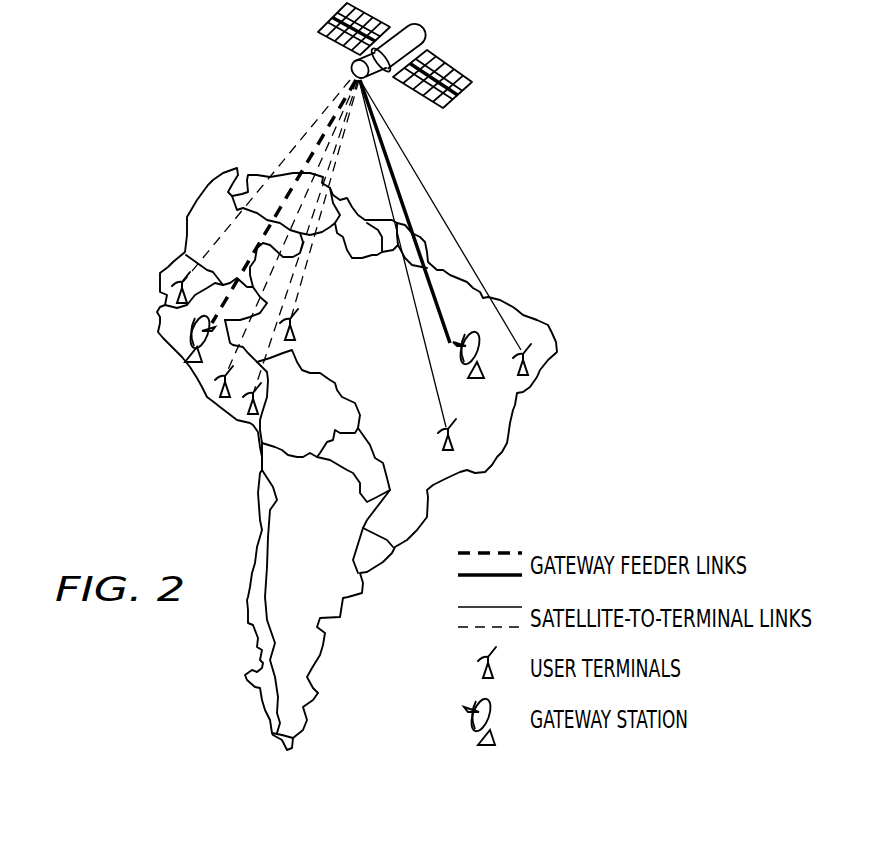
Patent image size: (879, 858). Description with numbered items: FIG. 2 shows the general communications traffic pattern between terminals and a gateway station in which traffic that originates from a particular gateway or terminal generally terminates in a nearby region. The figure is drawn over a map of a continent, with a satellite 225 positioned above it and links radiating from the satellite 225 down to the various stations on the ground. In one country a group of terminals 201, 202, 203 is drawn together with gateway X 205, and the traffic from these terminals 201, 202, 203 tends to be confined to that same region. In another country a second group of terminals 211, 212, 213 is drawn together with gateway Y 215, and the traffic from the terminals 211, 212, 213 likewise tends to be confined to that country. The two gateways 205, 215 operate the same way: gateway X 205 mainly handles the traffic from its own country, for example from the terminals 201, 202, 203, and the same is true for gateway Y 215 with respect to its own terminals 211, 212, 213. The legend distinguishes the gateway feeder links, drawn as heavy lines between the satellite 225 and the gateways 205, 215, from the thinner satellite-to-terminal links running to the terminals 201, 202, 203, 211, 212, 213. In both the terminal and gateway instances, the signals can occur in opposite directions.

The satellite 225 is at (424, 45).
The terminal 201 is at (172, 279).
The terminal 202 is at (220, 408).
The terminal 203 is at (246, 415).
The gateway X 205 is at (186, 353).
The terminal 211 is at (297, 333).
The terminal 212 is at (528, 363).
The terminal 213 is at (444, 438).
The gateway Y 215 is at (477, 382).